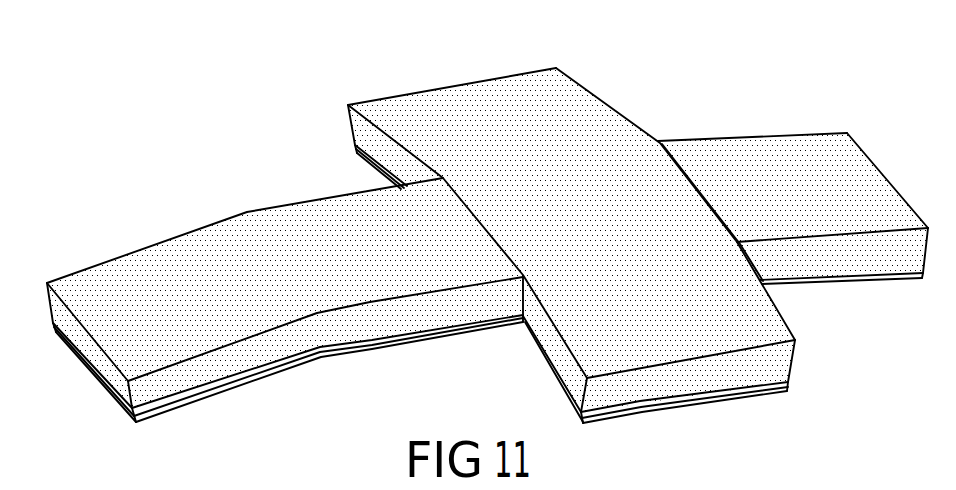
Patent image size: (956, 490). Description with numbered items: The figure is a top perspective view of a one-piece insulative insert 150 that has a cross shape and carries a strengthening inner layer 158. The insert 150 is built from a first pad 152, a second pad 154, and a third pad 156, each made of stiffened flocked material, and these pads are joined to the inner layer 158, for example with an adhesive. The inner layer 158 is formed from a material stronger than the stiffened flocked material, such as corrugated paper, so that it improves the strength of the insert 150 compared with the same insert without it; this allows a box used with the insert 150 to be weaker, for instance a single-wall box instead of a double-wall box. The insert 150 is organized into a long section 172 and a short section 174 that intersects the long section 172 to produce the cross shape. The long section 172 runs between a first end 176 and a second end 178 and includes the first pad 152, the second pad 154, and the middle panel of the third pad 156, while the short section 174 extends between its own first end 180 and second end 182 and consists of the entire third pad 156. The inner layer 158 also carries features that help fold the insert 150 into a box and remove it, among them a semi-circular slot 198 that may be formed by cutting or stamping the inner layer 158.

The insulative insert 150 is at (236, 126).
The first pad 152 is at (778, 155).
The second pad 154 is at (178, 258).
The third pad 156 is at (605, 183).
The strengthening inner layer 158 is at (408, 342).
The long section 172 is at (69, 366).
The short section 174 is at (436, 58).
The first end 176 is at (862, 157).
The second end 178 is at (58, 311).
The first end 180 is at (388, 97).
The second end 182 is at (682, 383).
The semi-circular slot 198 is at (95, 370).